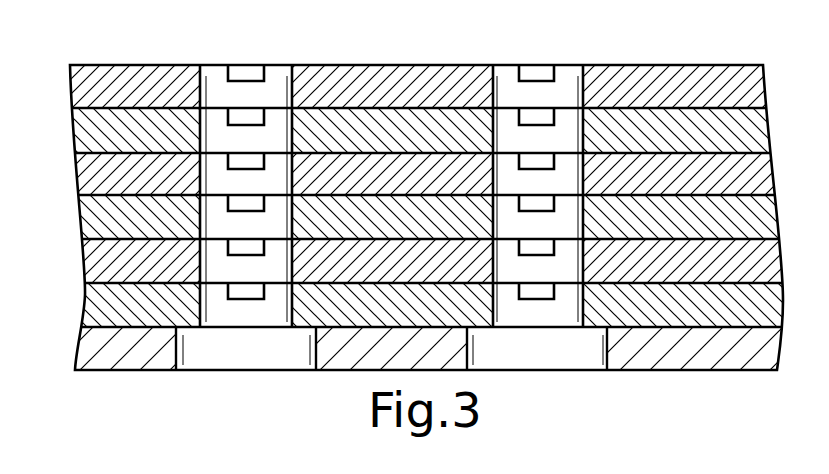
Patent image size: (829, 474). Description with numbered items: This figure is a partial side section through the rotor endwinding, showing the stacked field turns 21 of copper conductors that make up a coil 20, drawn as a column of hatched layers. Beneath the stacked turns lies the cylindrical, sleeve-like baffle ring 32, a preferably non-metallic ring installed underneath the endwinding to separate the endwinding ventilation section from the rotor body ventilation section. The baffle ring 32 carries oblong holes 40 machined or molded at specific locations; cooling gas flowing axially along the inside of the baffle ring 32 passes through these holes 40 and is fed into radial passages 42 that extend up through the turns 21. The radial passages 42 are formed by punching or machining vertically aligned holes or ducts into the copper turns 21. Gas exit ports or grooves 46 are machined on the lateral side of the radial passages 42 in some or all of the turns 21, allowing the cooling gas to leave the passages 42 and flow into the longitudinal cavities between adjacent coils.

The coil 20 is at (157, 63).
The field turns 21 is at (97, 258).
The baffle ring 32 is at (662, 353).
The oblong holes 40 is at (247, 358).
The radial passages 42 is at (276, 65).
The gas exit ports or grooves 46 is at (240, 72).